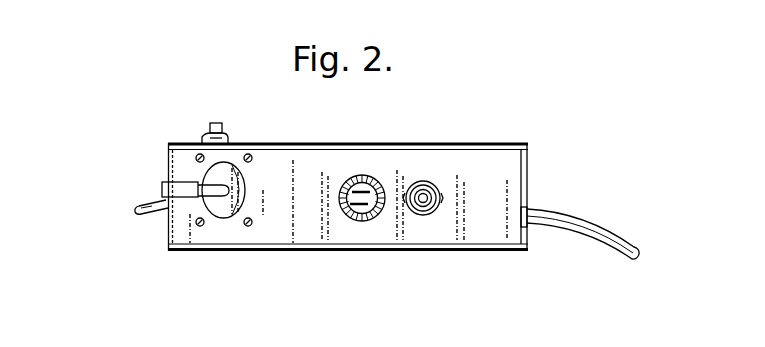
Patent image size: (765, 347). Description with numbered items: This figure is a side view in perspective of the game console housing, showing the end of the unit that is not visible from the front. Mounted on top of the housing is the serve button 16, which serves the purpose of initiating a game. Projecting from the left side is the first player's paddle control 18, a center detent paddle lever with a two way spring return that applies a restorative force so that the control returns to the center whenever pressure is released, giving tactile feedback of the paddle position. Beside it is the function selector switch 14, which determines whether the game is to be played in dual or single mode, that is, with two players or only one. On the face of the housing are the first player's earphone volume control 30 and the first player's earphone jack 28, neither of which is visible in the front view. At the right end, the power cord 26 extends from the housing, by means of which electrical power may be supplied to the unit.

The function selector switch 14 is at (140, 214).
The serve button 16 is at (208, 125).
The first player's paddle control 18 is at (188, 192).
The power cord 26 is at (613, 247).
The first player's earphone jack 28 is at (434, 216).
The first player's earphone volume control 30 is at (361, 223).